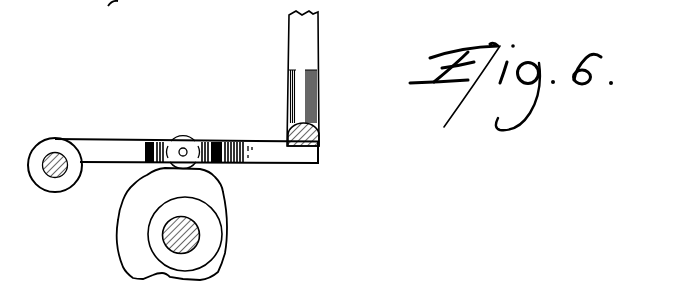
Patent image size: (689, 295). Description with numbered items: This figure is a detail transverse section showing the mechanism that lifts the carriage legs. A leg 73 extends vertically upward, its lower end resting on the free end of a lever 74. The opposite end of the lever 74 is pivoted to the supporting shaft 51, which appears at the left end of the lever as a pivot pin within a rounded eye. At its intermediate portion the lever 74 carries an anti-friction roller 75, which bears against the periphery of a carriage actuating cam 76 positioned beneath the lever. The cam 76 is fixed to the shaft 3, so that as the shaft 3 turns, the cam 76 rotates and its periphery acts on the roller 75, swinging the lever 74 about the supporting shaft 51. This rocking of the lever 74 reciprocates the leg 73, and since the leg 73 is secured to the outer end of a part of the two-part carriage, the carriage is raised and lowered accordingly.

The shaft 3 is at (185, 238).
The supporting shaft 51 is at (55, 162).
The leg 73 is at (304, 62).
The lever 74 is at (269, 152).
The anti-friction roller 75 is at (188, 129).
The carriage actuating cam 76 is at (130, 226).